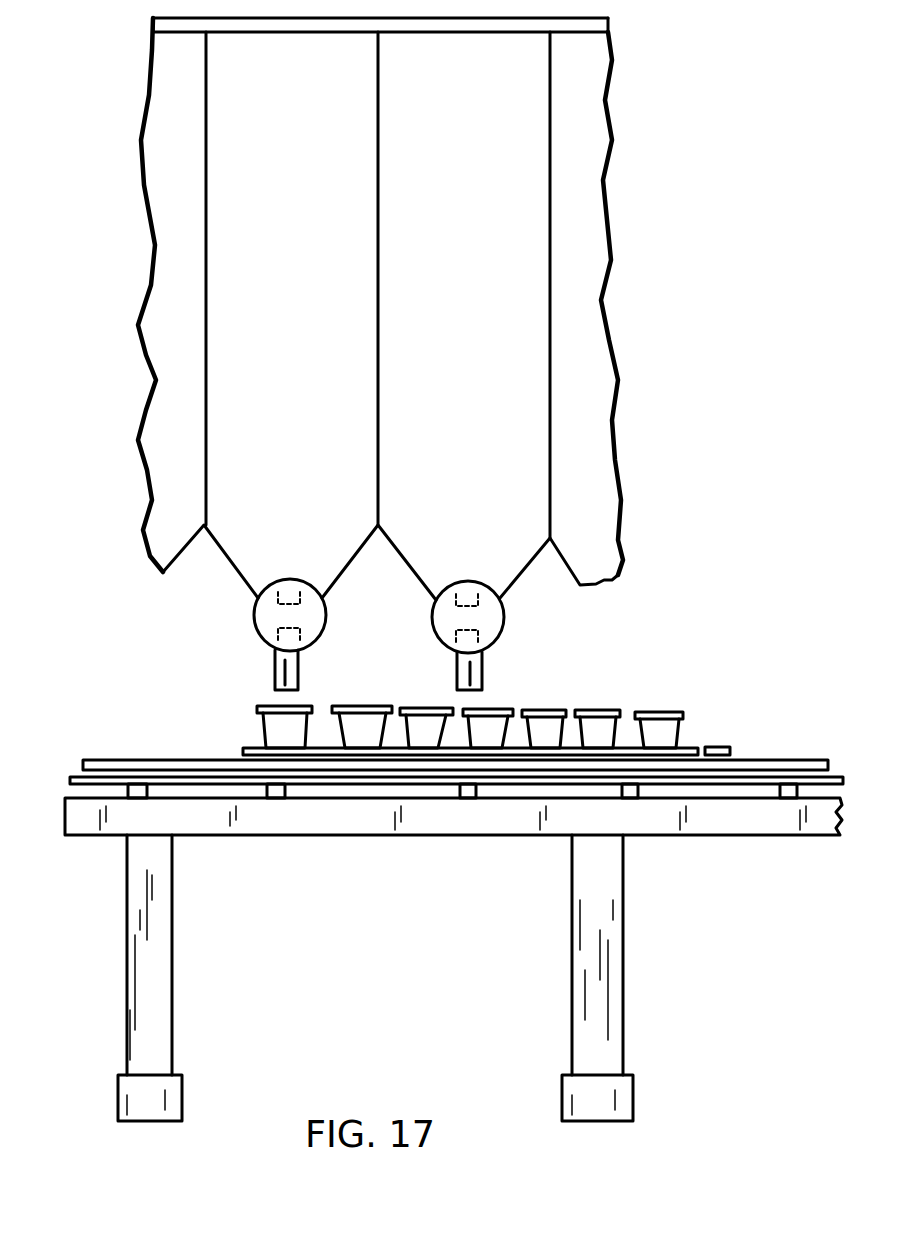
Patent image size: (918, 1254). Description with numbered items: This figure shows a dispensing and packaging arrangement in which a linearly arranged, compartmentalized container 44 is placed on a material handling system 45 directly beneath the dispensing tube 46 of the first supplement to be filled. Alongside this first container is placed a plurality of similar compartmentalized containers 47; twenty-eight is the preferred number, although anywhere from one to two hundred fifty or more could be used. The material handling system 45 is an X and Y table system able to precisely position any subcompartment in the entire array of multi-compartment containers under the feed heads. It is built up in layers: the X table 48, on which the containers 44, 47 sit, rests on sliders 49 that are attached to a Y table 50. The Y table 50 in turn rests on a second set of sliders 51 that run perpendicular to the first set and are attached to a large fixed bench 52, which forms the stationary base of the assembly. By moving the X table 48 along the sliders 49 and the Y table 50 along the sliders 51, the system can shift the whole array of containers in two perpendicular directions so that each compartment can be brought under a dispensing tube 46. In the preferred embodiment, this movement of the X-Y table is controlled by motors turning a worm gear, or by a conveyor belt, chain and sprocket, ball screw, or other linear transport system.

The compartmentalized container 44 is at (270, 722).
The material handling system 45 is at (425, 804).
The dispensing tube 46 is at (296, 666).
The plurality of containers 47 is at (653, 722).
The X table 48 is at (250, 750).
The sliders 49 is at (746, 755).
The Y table 50 is at (83, 765).
The sliders 51 is at (797, 790).
The fixed bench 52 is at (452, 839).